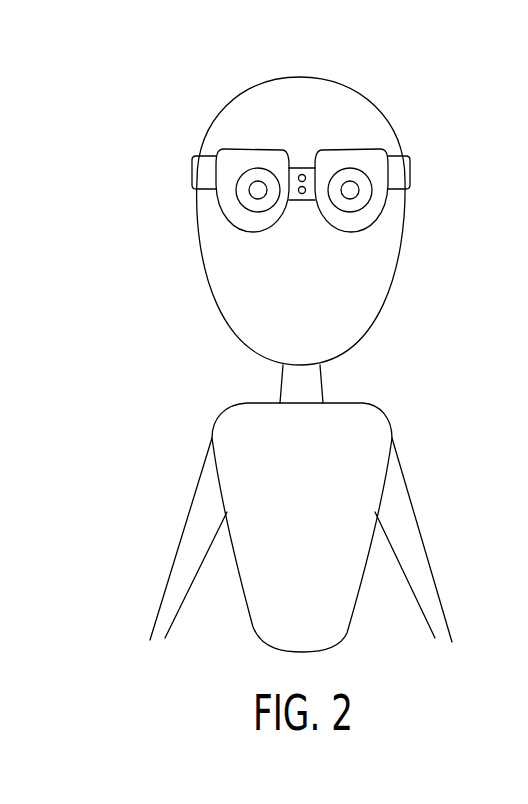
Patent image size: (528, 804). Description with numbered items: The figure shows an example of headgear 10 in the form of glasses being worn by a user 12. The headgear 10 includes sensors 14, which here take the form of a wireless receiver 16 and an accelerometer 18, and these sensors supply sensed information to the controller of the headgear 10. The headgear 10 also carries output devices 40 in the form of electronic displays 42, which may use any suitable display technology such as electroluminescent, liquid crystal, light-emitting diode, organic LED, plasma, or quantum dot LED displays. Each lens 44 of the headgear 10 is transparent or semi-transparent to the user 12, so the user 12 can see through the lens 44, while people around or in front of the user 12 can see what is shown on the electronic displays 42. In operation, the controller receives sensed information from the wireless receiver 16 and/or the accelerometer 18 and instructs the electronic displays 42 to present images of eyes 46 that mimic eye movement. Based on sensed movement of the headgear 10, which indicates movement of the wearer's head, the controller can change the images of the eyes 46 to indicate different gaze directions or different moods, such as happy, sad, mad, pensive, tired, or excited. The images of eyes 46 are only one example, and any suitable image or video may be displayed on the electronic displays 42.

The headgear 10 is at (294, 170).
The user 12 is at (383, 417).
The sensors 14 is at (395, 192).
The wireless receiver 16 is at (302, 167).
The accelerometer 18 is at (303, 200).
The output devices 40 is at (187, 194).
The electronic displays 42 is at (224, 190).
The lens 44 is at (247, 166).
The images of eyes 46 is at (249, 171).